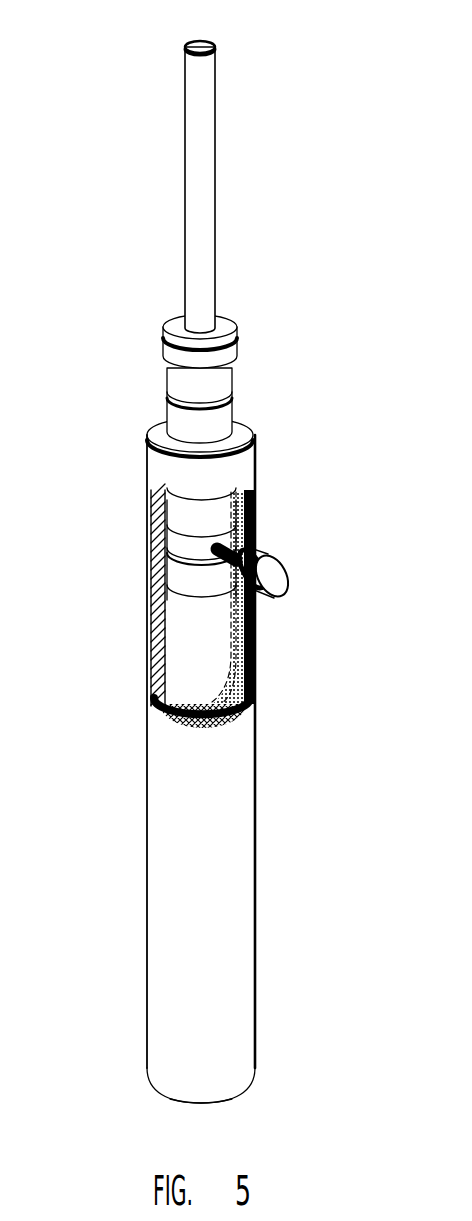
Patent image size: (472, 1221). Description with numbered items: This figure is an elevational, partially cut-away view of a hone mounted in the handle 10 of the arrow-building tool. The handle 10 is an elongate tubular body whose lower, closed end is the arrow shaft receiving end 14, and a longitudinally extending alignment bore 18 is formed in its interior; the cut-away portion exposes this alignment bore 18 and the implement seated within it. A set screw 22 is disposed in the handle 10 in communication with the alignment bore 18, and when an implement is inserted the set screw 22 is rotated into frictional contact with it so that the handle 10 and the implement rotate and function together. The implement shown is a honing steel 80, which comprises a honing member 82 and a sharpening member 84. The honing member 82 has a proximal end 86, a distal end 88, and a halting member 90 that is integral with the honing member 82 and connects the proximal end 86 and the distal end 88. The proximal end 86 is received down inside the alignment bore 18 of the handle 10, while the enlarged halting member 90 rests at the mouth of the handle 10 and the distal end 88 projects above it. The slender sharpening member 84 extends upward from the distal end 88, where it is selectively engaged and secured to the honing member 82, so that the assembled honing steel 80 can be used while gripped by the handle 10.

The handle 10 is at (264, 695).
The arrow shaft receiving end 14 is at (220, 1104).
The alignment bore 18 is at (193, 653).
The set screw 22 is at (278, 568).
The honing steel 80 is at (190, 261).
The honing member 82 is at (167, 440).
The sharpening member 84 is at (202, 147).
The proximal end 86 is at (160, 601).
The distal end 88 is at (185, 358).
The halting member 90 is at (230, 472).